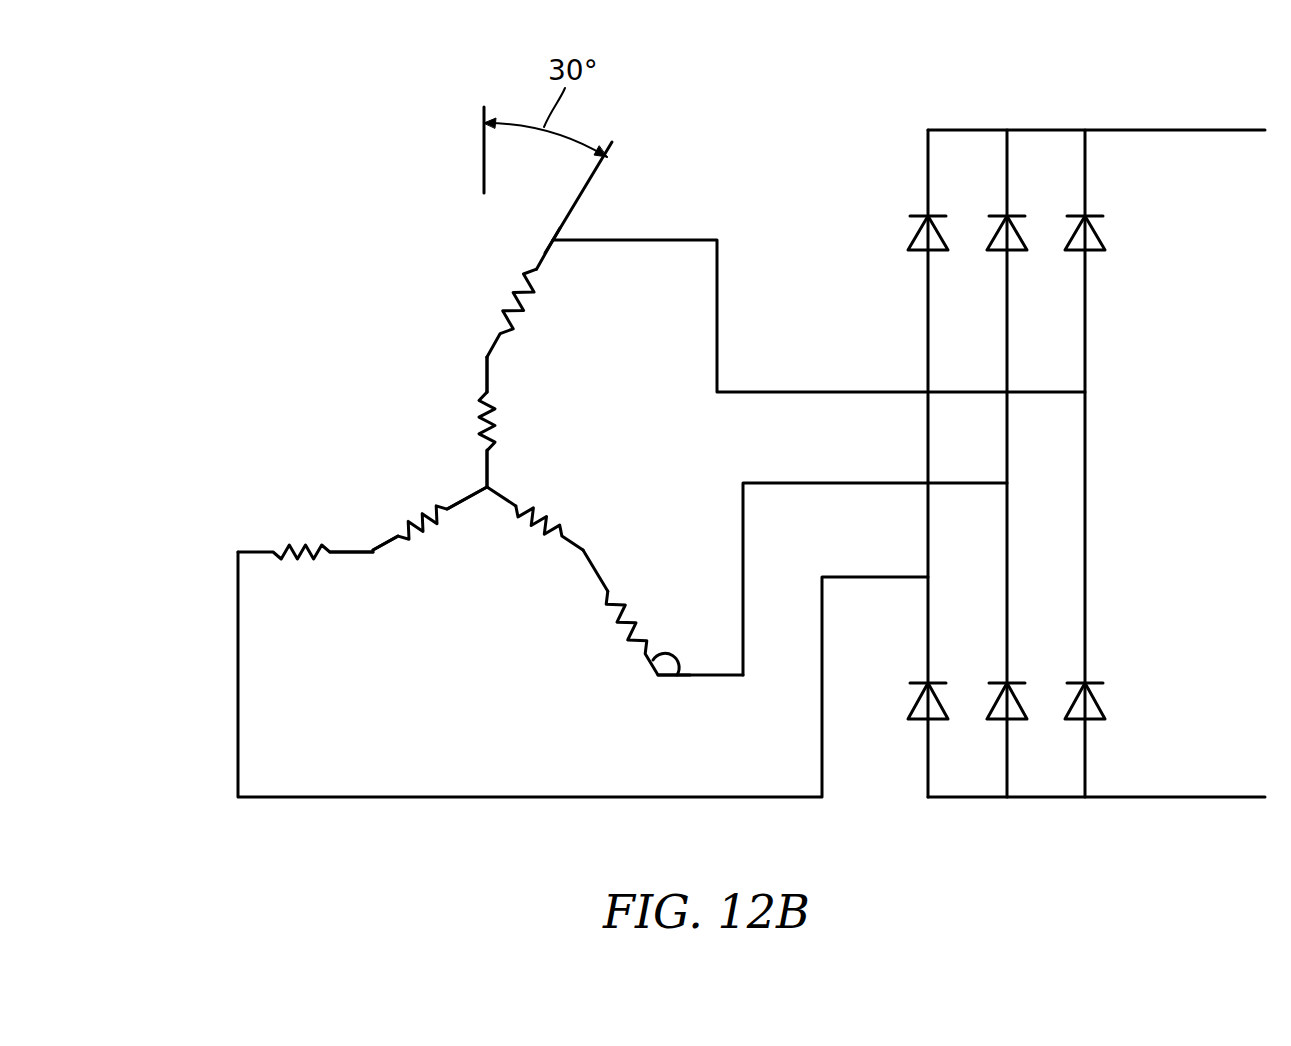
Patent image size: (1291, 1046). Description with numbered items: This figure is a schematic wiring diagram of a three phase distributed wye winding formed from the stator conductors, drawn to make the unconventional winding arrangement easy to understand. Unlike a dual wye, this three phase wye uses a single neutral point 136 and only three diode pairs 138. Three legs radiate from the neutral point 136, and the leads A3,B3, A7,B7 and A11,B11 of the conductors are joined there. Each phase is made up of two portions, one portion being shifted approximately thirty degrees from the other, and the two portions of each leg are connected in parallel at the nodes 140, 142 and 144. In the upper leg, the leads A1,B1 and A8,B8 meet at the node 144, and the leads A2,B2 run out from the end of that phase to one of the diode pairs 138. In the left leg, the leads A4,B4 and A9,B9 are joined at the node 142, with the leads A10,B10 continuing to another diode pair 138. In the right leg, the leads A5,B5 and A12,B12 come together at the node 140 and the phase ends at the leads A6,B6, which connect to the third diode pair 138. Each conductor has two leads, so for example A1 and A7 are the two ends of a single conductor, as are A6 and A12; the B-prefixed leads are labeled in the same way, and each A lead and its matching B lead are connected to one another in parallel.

The conductor leads A1,B1 is at (487, 362).
The conductor leads A2,B2 is at (548, 246).
The conductor leads A3,B3 is at (468, 505).
The conductor leads A4,B4 is at (350, 553).
The conductor leads A5,B5 is at (583, 548).
The conductor leads A6,B6 is at (675, 677).
The conductor leads A7,B7 is at (487, 467).
The conductor leads A8,B8 is at (495, 336).
The conductor leads A9,B9 is at (387, 553).
The conductor leads A10,B10 is at (250, 550).
The conductor leads A11,B11 is at (505, 493).
The conductor leads A12,B12 is at (660, 550).
The neutral point 136 is at (497, 487).
The diode pairs 138 is at (1092, 813).
The node 140 is at (597, 560).
The node 142 is at (370, 550).
The node 144 is at (488, 357).